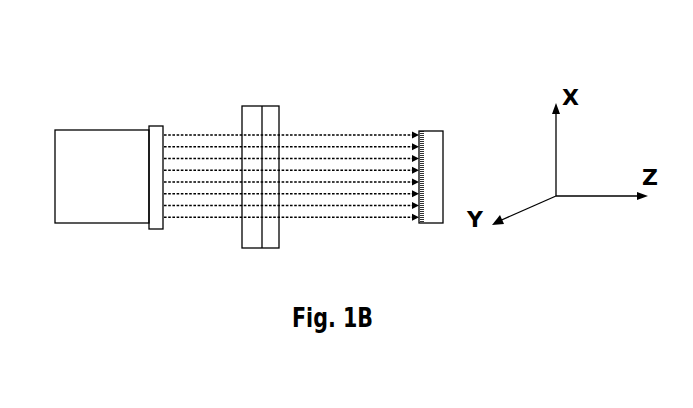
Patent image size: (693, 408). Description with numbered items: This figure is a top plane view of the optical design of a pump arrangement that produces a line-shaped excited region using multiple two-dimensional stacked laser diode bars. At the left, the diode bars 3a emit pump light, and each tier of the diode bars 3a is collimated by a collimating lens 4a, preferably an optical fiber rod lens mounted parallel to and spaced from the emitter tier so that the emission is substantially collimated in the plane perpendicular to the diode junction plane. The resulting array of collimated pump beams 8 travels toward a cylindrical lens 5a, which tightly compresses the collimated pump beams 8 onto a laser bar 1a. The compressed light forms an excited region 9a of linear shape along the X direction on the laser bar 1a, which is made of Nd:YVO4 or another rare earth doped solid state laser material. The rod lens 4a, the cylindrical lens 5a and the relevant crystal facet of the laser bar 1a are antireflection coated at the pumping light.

The diode bars 3a is at (103, 148).
The collimating lens 4a is at (156, 137).
The collimated pump beams 8 is at (205, 162).
The cylindrical lens 5a is at (254, 132).
The excited region 9a is at (410, 154).
The laser bar 1a is at (433, 157).